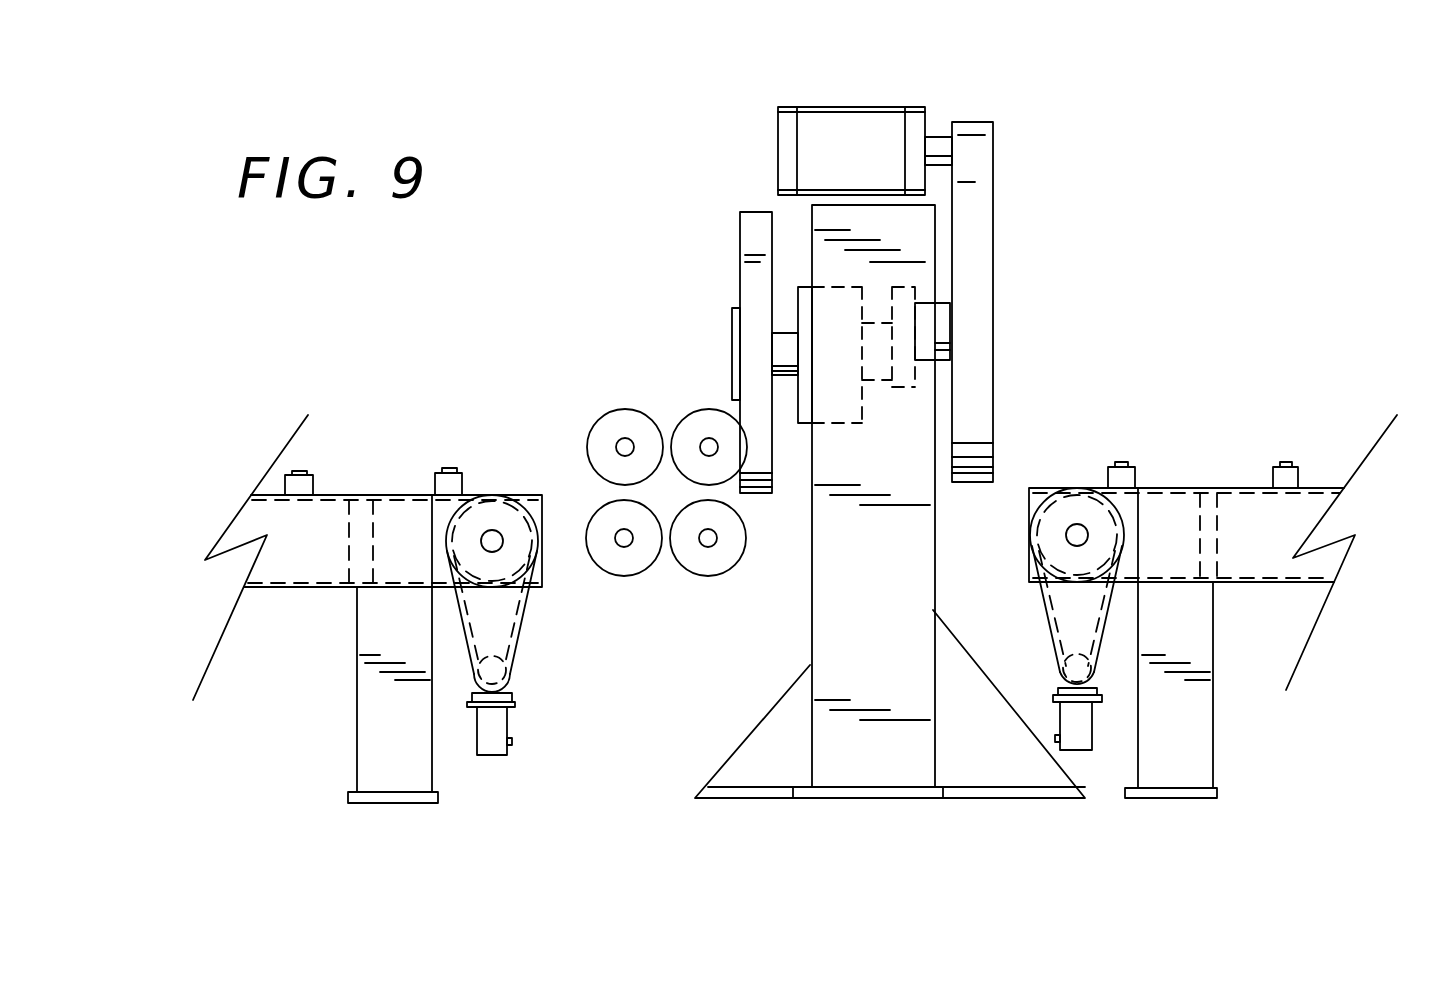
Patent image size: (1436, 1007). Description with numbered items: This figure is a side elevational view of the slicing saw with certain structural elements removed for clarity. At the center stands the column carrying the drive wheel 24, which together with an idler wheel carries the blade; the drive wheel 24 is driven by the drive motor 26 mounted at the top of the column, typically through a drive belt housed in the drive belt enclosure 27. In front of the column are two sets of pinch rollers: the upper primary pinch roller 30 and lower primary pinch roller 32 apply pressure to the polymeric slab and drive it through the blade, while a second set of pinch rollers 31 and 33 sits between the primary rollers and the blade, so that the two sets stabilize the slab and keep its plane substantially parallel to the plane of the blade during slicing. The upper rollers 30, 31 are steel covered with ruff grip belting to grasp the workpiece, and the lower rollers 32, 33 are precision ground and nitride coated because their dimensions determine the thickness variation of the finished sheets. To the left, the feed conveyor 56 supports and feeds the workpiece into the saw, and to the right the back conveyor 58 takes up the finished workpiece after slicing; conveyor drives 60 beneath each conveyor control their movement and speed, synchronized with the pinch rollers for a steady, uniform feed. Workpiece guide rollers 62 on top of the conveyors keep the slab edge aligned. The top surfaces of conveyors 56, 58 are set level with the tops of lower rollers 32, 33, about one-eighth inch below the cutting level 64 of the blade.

The drive wheel 24 is at (752, 245).
The drive motor 26 is at (847, 127).
The drive belt enclosure 27 is at (970, 247).
The upper primary pinch roller 30 is at (605, 433).
The upper pinch roller of second set 31 is at (705, 422).
The lower primary pinch roller 32 is at (623, 560).
The lower pinch roller of second set 33 is at (707, 560).
The feed conveyor 56 is at (373, 522).
The back conveyor 58 is at (1220, 518).
The conveyor drive 60 is at (512, 638).
The workpiece guide roller 62 is at (313, 475).
The cutting level 64 is at (755, 495).